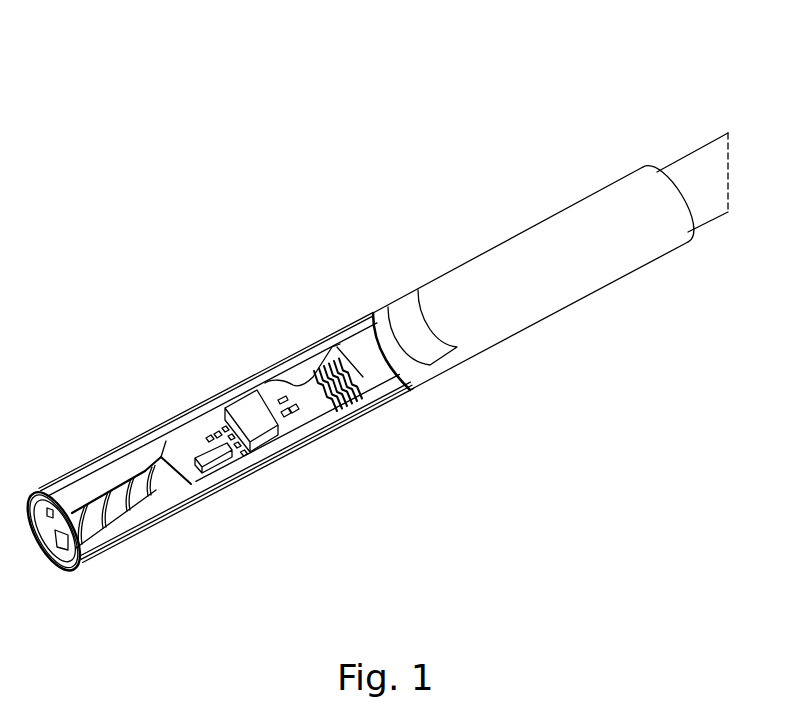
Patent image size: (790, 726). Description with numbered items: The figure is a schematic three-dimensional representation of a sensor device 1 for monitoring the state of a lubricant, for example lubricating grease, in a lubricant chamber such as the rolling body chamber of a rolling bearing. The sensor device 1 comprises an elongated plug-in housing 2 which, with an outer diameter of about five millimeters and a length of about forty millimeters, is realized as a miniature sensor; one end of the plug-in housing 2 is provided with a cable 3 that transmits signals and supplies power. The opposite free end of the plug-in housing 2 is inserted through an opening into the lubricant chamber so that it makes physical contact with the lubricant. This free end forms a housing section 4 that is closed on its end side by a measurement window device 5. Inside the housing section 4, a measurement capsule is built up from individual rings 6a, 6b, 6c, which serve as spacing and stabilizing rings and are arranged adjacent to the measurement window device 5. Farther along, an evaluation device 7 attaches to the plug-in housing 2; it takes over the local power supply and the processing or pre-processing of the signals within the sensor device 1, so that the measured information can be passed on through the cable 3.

The sensor device 1 is at (648, 92).
The plug-in housing 2 is at (620, 143).
The cable 3 is at (697, 163).
The housing section 4 is at (169, 527).
The measurement window device 5 is at (47, 547).
The ring 6a is at (118, 498).
The ring 6b is at (106, 510).
The ring 6c is at (130, 495).
The evaluation device 7 is at (267, 437).